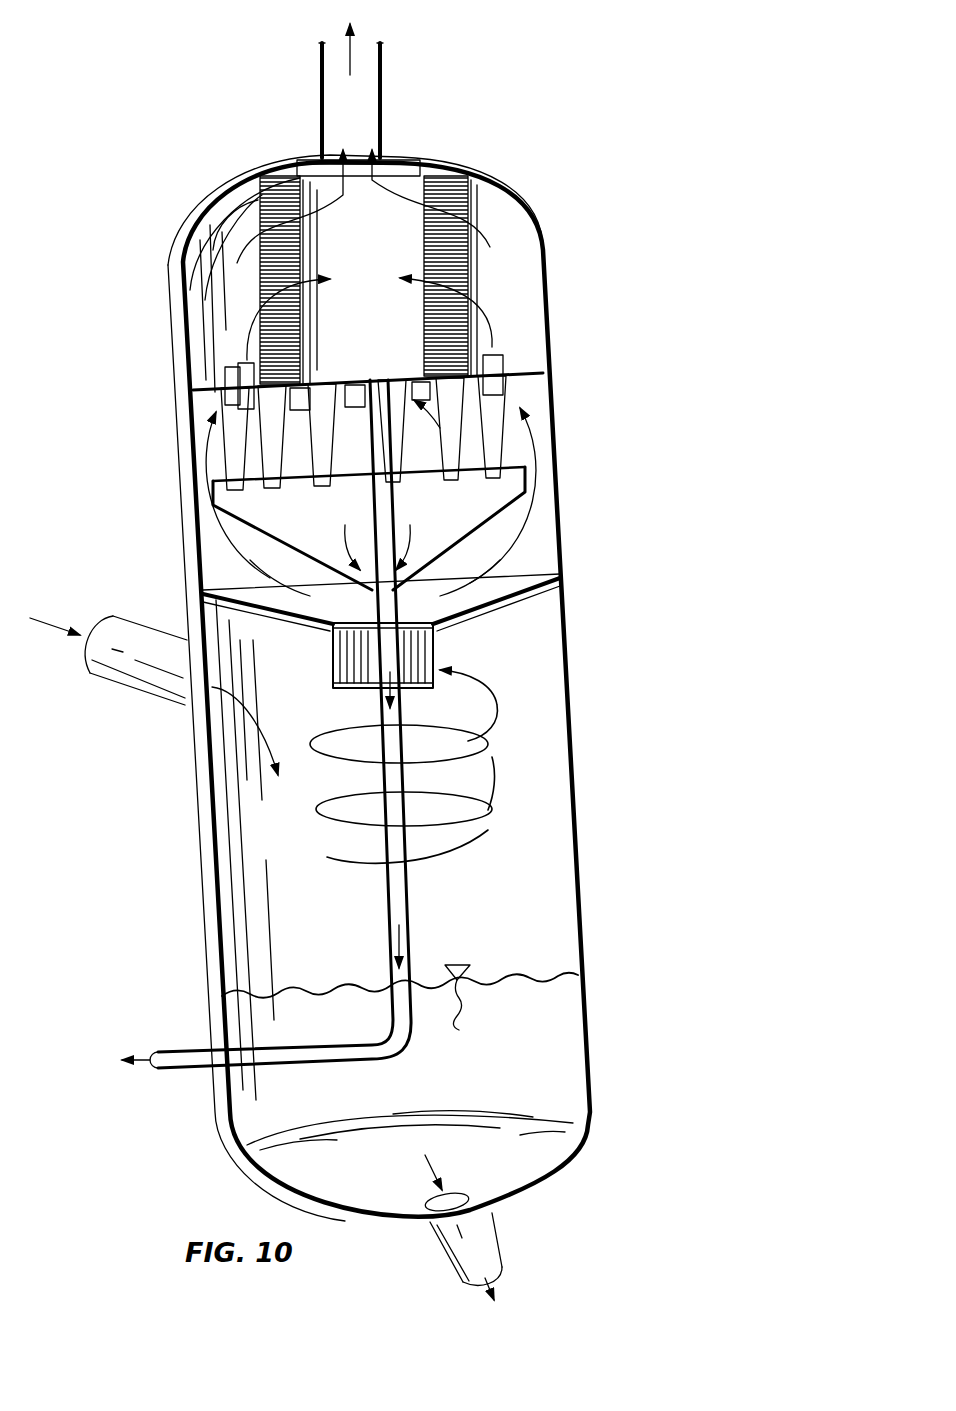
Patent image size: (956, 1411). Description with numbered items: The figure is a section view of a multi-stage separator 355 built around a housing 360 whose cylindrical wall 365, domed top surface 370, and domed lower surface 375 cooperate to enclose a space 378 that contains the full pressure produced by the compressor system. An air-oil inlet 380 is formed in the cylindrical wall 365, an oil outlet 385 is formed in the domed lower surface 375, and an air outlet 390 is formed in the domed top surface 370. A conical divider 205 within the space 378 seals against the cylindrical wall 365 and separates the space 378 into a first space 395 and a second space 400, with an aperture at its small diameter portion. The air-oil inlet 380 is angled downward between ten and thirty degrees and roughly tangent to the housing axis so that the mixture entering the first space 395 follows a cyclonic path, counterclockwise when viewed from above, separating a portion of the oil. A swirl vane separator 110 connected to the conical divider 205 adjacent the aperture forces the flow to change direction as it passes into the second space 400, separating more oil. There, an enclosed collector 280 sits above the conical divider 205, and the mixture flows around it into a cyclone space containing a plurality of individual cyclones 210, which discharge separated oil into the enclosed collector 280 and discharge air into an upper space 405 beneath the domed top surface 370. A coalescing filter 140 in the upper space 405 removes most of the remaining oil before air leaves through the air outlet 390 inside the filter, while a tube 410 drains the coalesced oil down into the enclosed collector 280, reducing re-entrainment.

The swirl vane separator 110 is at (430, 640).
The coalescing filter 140 is at (450, 265).
The conical divider 205 is at (270, 612).
The individual cyclones 210 is at (512, 440).
The enclosed collector 280 is at (527, 478).
The multi-stage separator 355 is at (580, 122).
The housing 360 is at (190, 857).
The cylindrical wall 365 is at (572, 868).
The domed top surface 370 is at (520, 196).
The domed lower surface 375 is at (567, 1157).
The space 378 is at (543, 657).
The air-oil inlet 380 is at (117, 675).
The oil outlet 385 is at (182, 1058).
The air outlet 390 is at (376, 45).
The first space 395 is at (538, 778).
The second space 400 is at (538, 545).
The upper space 405 is at (518, 298).
The tube 410 is at (374, 500).